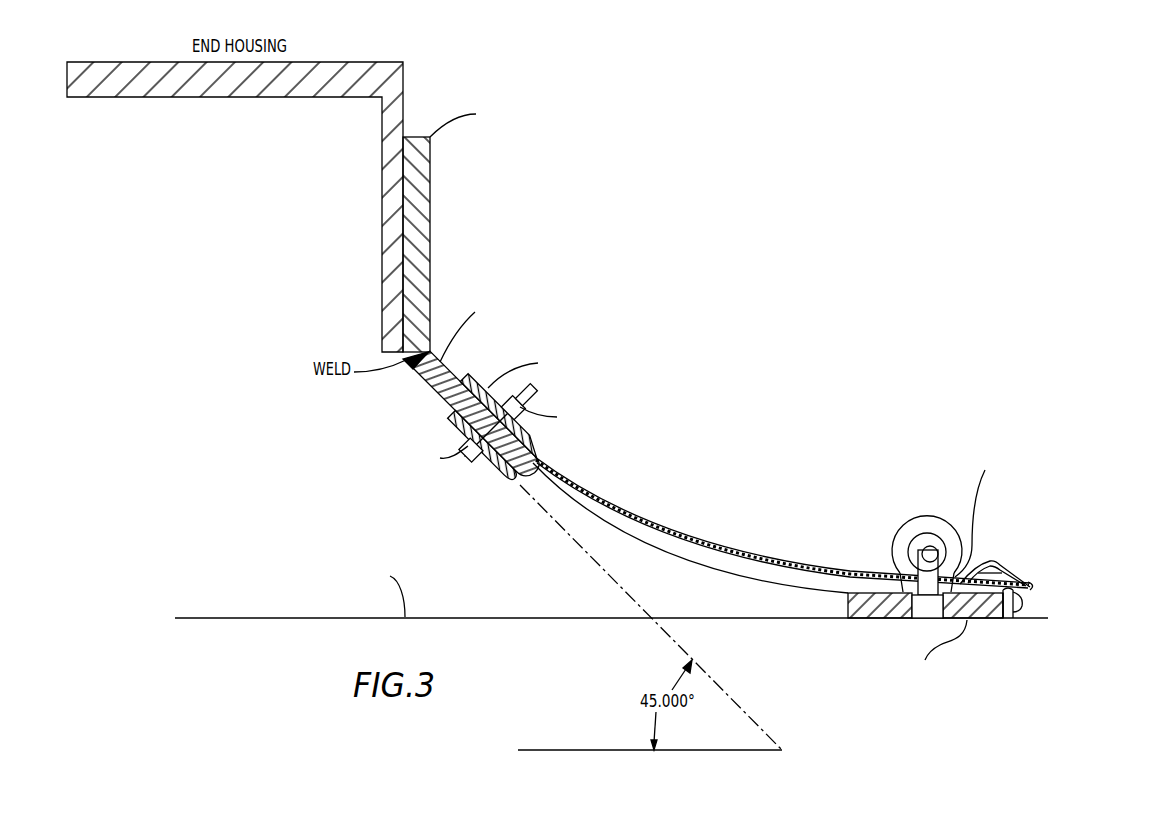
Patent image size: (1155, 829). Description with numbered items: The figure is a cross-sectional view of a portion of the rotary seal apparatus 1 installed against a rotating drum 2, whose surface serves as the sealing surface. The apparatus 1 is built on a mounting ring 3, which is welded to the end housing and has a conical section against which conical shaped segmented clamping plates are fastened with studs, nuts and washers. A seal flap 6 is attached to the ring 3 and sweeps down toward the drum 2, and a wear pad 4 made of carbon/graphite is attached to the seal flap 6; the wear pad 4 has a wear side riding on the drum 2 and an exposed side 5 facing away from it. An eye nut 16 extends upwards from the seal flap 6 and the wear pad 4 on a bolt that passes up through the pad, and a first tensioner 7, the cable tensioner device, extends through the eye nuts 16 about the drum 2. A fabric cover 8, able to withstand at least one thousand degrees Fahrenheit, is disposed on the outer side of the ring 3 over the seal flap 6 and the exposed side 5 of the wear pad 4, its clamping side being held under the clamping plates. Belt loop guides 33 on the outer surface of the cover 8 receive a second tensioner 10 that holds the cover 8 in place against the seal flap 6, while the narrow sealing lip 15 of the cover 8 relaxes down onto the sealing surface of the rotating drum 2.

The rotary seal apparatus 1 is at (786, 268).
The rotating drum 2 is at (465, 617).
The mounting ring 3 is at (464, 176).
The wear pad 4 is at (884, 677).
The exposed side 5 is at (1002, 620).
The seal flap 6 is at (692, 555).
The first tensioner 7 is at (942, 550).
The cover 8 is at (722, 545).
The second tensioner 10 is at (1032, 583).
The sealing lip 15 is at (1017, 612).
The eye nut 16 is at (900, 540).
The belt loop guides 33 is at (995, 560).